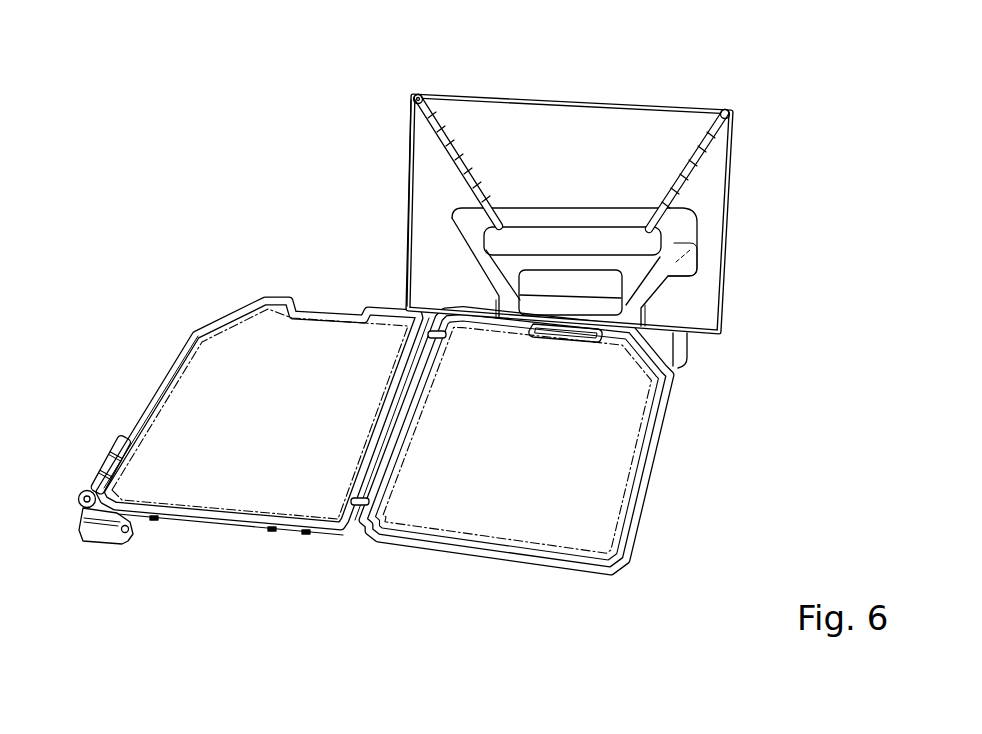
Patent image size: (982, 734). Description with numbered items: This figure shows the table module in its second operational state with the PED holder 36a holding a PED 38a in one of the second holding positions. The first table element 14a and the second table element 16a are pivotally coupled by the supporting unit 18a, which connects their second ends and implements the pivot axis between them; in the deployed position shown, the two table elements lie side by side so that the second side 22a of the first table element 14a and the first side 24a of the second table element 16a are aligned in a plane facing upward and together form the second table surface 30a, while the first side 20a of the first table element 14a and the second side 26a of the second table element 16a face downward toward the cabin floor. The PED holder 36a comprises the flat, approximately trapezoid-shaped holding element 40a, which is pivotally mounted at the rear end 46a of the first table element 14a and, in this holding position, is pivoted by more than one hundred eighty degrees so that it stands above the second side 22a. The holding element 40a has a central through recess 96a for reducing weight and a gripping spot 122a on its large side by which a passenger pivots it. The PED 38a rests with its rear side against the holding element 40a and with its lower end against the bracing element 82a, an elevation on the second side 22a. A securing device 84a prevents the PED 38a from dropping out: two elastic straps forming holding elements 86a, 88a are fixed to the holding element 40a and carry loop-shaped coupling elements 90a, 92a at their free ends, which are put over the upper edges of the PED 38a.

The first table element 14a is at (535, 560).
The second table element 16a is at (157, 402).
The supporting unit 18a is at (350, 537).
The first side of the first table element 20a is at (438, 559).
The second side of the first table element 22a is at (590, 462).
The first side of the second table element 24a is at (249, 374).
The second side of the second table element 26a is at (212, 529).
The second table surface 30a is at (178, 362).
The PED holder 36a is at (768, 248).
The PED 38a is at (443, 143).
The holding element 40a is at (594, 220).
The rear end 46a is at (648, 311).
The bracing element 82a is at (600, 335).
The securing device 84a is at (403, 191).
The holding element 86a is at (452, 207).
The holding element 88a is at (705, 125).
The coupling element 90a is at (433, 92).
The coupling element 92a is at (705, 145).
The through recess 96a is at (547, 285).
The gripping spot 122a is at (690, 258).